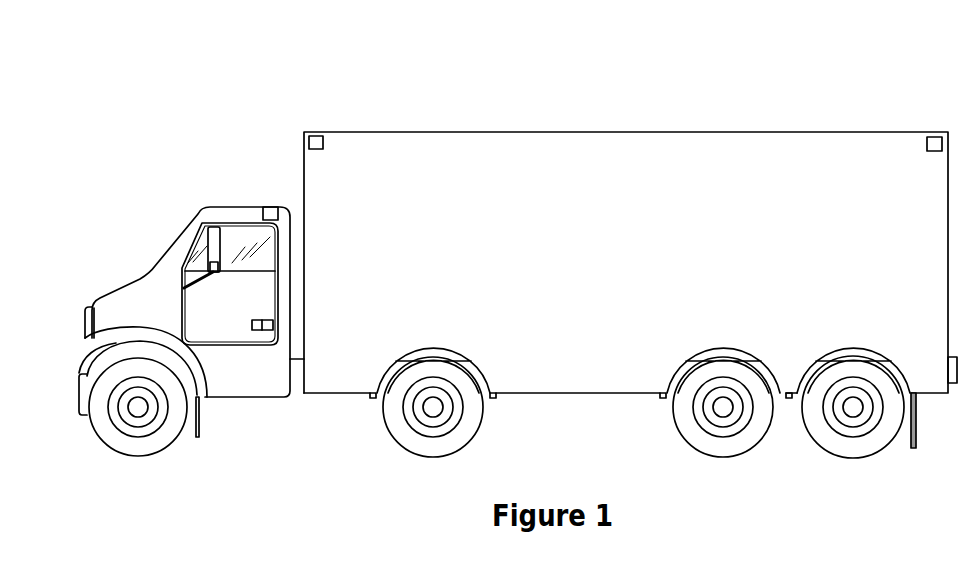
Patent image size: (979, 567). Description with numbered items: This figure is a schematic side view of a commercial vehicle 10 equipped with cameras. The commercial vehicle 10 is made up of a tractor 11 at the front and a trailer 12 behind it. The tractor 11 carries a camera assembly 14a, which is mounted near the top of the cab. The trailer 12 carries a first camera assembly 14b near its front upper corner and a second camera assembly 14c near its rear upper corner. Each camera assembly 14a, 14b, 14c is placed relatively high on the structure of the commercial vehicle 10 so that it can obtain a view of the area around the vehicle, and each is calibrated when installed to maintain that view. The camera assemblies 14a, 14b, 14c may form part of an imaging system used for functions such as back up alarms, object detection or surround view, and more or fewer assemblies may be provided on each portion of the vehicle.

The commercial vehicle 10 is at (477, 57).
The tractor 11 is at (223, 207).
The trailer 12 is at (457, 132).
The camera assembly 14a is at (270, 207).
The first camera assembly 14b is at (316, 137).
The second camera assembly 14c is at (935, 137).